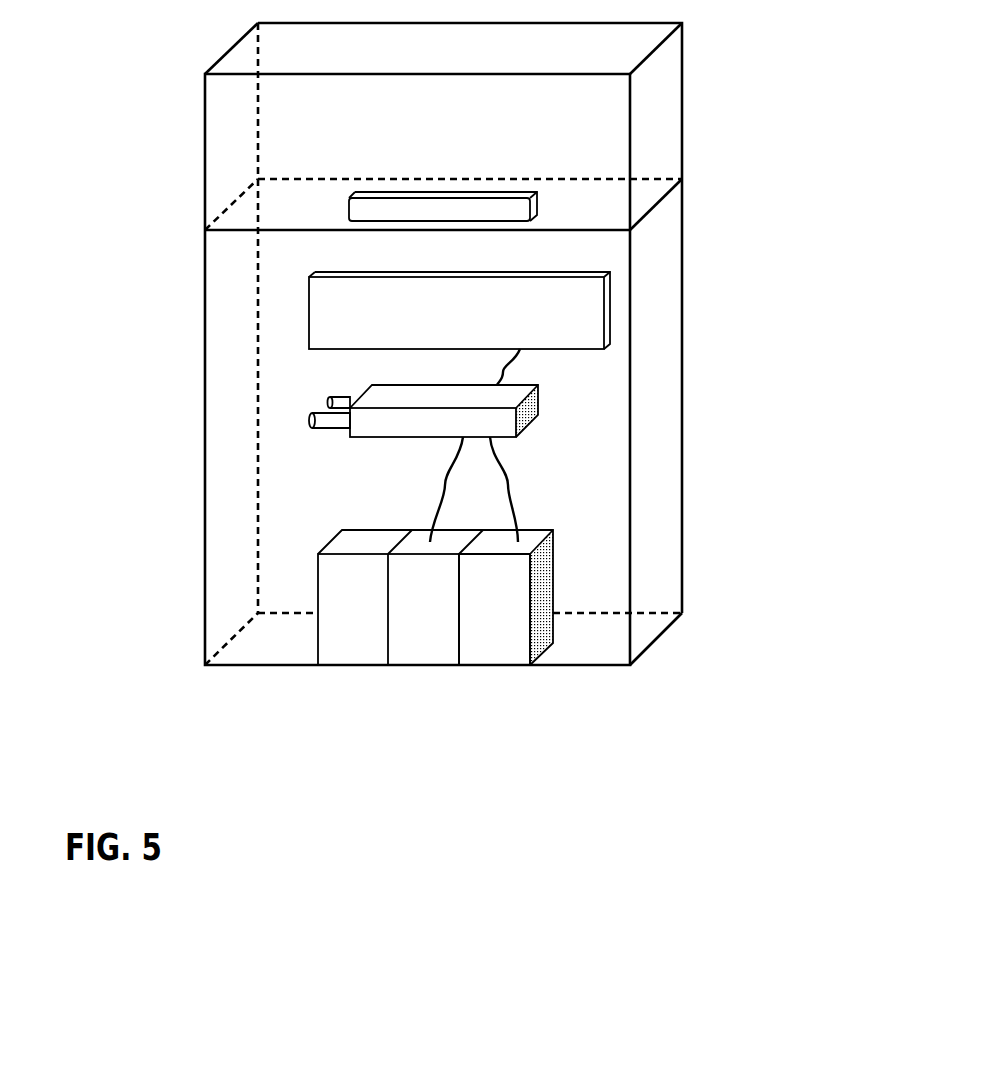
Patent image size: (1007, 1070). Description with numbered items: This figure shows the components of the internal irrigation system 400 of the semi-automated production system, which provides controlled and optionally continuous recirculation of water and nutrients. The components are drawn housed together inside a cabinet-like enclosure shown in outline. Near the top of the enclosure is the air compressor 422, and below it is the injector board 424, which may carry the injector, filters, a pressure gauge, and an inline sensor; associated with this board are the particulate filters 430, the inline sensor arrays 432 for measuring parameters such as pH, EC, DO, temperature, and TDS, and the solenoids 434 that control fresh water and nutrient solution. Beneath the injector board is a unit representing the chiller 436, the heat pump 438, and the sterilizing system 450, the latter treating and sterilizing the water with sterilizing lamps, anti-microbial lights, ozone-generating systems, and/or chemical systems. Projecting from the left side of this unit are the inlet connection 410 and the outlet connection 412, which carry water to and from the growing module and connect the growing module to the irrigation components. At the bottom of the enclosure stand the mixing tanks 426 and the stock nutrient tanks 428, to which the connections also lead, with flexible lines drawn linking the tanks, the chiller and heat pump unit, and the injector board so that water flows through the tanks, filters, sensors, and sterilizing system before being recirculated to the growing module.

The internal irrigation system 400 is at (563, 802).
The air compressor 422 is at (480, 206).
The injector board 424 is at (323, 299).
The particulate filters 430 is at (323, 299).
The inline sensor arrays 432 is at (323, 299).
The solenoids 434 is at (363, 313).
The chiller 436 is at (603, 445).
The heat pump 438 is at (603, 445).
The sterilizing system 450 is at (538, 403).
The connection to irrigation system (out) 412 is at (330, 398).
The connection to irrigation system (in) 410 is at (337, 425).
The mixing tanks 426 is at (412, 613).
The stock nutrient tanks 428 is at (495, 615).